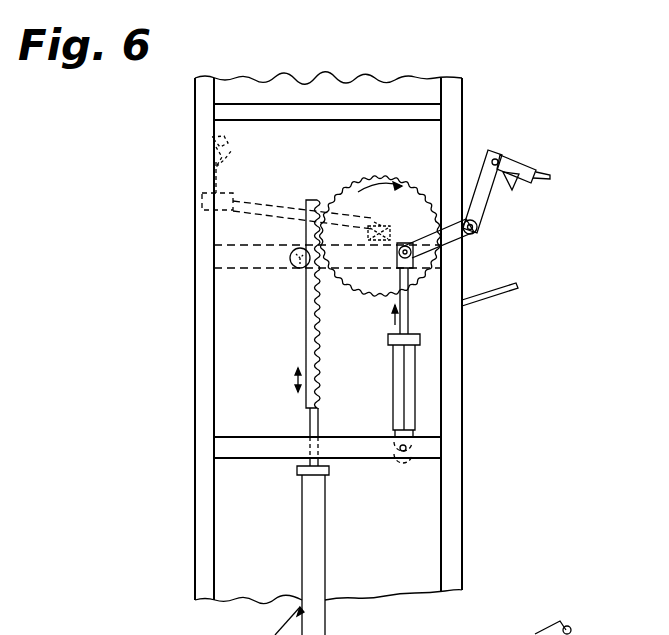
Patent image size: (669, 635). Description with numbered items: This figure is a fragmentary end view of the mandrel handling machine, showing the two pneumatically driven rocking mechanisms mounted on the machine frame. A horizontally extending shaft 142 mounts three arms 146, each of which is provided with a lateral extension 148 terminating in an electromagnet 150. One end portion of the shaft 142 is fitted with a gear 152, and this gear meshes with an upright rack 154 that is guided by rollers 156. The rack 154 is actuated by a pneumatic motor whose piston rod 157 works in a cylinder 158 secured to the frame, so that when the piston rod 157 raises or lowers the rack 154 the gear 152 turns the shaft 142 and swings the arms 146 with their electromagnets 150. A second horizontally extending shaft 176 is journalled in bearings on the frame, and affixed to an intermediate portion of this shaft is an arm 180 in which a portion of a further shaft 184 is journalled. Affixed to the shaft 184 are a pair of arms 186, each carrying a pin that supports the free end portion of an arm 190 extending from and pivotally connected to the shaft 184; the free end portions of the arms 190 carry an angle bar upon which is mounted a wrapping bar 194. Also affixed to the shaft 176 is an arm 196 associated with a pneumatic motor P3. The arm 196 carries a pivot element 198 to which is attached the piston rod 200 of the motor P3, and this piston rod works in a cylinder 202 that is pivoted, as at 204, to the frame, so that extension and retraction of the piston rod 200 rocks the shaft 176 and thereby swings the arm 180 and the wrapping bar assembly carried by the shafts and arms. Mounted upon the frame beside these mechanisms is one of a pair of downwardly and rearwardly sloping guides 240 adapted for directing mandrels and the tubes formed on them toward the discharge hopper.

The electromagnet 150 is at (215, 141).
The lateral extension 148 is at (218, 168).
The arm 146 is at (248, 207).
The shaft 142 is at (378, 230).
The gear 152 is at (336, 194).
The upright rack 154 is at (312, 331).
The rollers 156 is at (296, 266).
The piston rod 157 is at (313, 420).
The cylinder 158 is at (318, 609).
The arm 196 is at (428, 240).
The pivot element 198 is at (418, 255).
The piston rod 200 is at (410, 315).
The cylinder 202 is at (405, 398).
The pneumatic motor P3 is at (418, 367).
The pivot 204 is at (410, 449).
The guide 240 is at (505, 302).
The shaft 176 is at (478, 231).
The arm 180 is at (484, 203).
The shaft 184 is at (497, 158).
The arm 190 is at (522, 168).
The wrapping bar 194 is at (549, 173).
The arm 186 is at (514, 186).